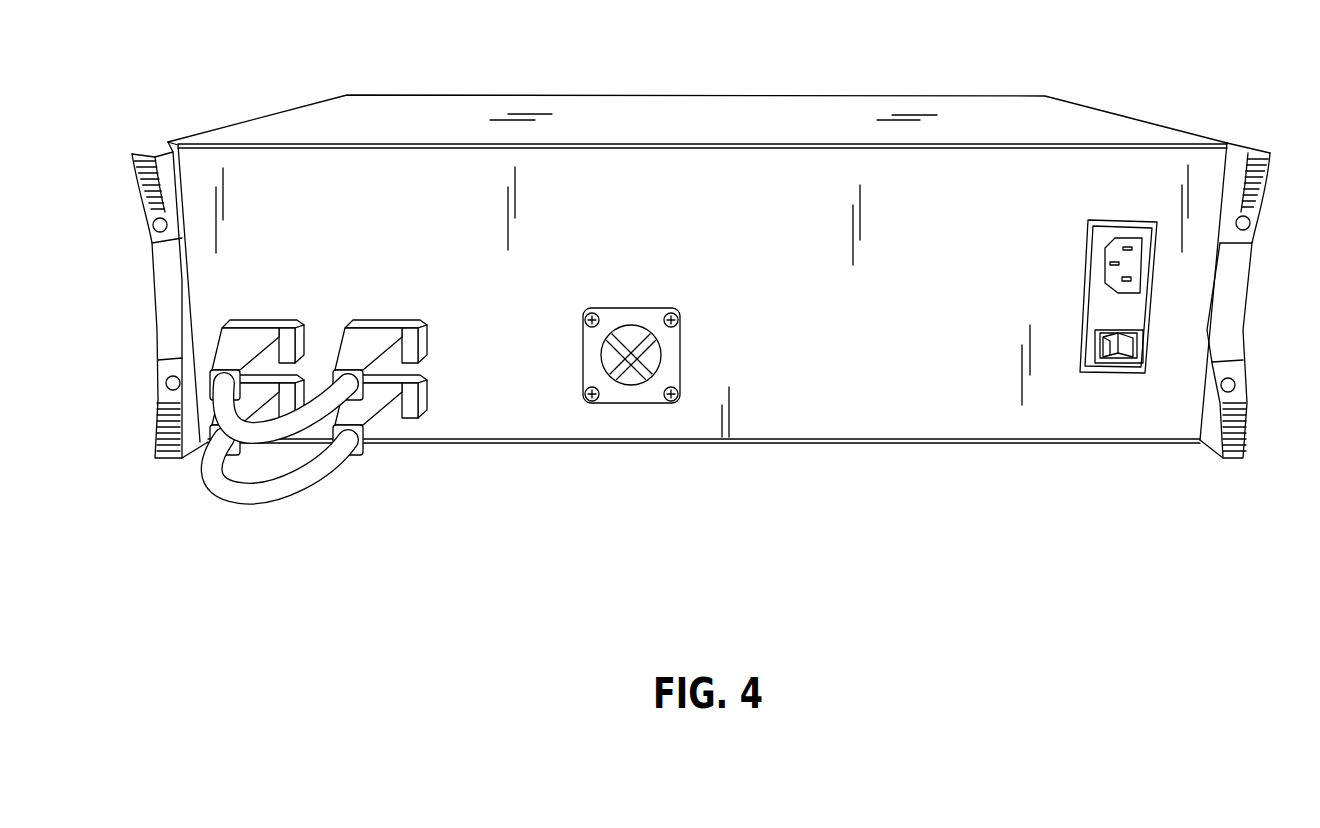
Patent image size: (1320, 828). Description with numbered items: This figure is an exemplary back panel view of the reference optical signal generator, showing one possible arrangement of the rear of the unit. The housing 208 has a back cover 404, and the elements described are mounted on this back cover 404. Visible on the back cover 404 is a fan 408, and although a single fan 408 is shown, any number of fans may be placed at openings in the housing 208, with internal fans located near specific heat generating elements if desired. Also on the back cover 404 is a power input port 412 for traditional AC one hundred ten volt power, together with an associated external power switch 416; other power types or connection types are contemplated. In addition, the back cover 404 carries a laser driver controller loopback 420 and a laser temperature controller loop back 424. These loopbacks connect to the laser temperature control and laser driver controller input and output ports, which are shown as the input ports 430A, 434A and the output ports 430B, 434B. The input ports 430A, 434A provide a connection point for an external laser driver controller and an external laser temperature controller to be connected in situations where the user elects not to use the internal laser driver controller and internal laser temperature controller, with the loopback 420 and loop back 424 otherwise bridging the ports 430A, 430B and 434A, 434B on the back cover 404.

The housing 208 is at (742, 120).
The back cover 404 is at (859, 400).
The fan 408 is at (636, 396).
The power input port 412 is at (1115, 248).
The external power switch 416 is at (1128, 353).
The laser driver controller loopback 420 is at (378, 427).
The laser temperature controller loop back 424 is at (380, 368).
The input port 430A is at (393, 322).
The output port 430B is at (268, 322).
The input port 434A is at (425, 378).
The output port 434B is at (300, 372).